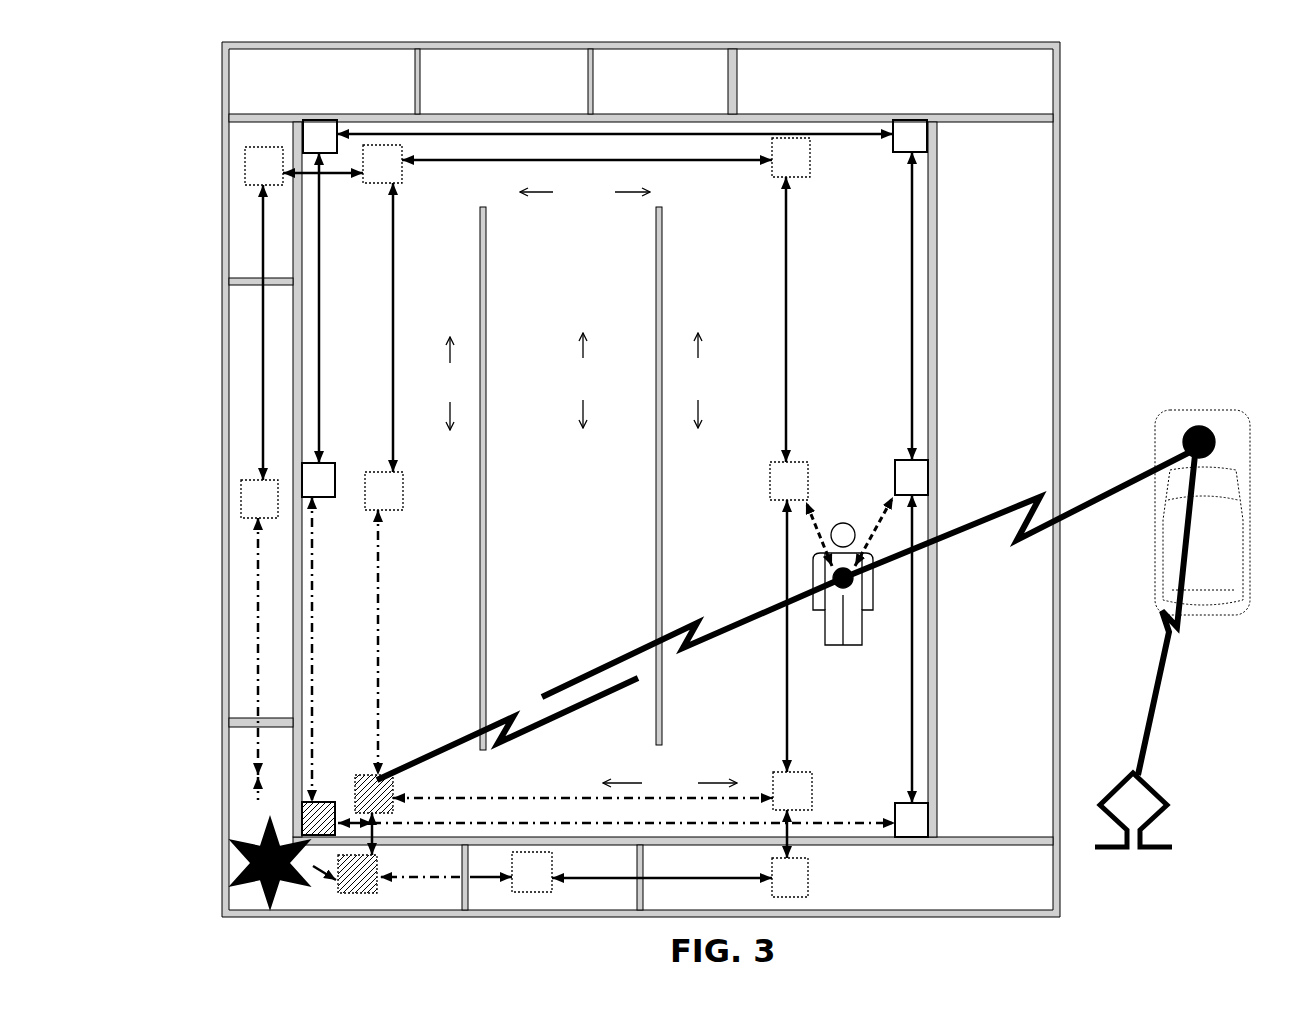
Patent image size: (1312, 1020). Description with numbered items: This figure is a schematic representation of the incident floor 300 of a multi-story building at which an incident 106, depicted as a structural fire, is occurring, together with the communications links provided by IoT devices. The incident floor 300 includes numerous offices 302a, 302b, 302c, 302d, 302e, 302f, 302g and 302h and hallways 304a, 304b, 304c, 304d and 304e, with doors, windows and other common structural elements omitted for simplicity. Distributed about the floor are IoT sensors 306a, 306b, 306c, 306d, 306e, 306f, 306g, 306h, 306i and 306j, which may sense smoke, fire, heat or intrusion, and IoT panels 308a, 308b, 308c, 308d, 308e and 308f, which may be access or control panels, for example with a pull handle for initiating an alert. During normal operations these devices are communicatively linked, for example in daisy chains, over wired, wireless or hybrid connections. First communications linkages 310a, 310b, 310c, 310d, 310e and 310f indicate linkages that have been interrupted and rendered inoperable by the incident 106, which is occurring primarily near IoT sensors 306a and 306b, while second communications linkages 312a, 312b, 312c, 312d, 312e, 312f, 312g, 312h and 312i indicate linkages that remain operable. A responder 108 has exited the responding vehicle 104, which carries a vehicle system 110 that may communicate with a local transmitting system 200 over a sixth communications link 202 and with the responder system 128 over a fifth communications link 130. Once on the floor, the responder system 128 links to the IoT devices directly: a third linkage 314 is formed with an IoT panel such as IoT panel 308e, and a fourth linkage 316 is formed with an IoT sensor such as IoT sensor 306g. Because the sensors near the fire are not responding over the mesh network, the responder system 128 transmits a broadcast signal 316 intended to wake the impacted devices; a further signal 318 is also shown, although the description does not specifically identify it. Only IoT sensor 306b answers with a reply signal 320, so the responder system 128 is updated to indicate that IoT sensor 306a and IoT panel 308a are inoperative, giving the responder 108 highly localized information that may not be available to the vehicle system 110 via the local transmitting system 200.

The incident floor 300 is at (1122, 245).
The incident location 106 is at (358, 700).
The office 302a is at (272, 750).
The office 302b is at (248, 400).
The office 302c is at (369, 81).
The office 302d is at (538, 81).
The office 302e is at (693, 81).
The office 302f is at (874, 453).
The office 302g is at (827, 877).
The office 302h is at (541, 877).
The hallway 304a is at (699, 380).
The hallway 304b is at (670, 783).
The hallway 304c is at (585, 192).
The hallway 304d is at (540, 478).
The hallway 304e is at (456, 383).
The IoT sensor 306a is at (378, 870).
The IoT sensor 306b is at (395, 788).
The IoT sensor 306c is at (245, 500).
The IoT sensor 306d is at (246, 182).
The IoT sensor 306e is at (403, 172).
The IoT sensor 306f is at (775, 180).
The IoT sensor 306g is at (380, 500).
The IoT sensor 306h is at (775, 774).
The IoT sensor 306i is at (668, 235).
The IoT sensor 306j is at (552, 869).
The IoT panel 308a is at (319, 802).
The IoT panel 308b is at (327, 470).
The IoT panel 308c is at (305, 120).
The IoT panel 308d is at (925, 133).
The IoT panel 308e is at (933, 468).
The IoT panel 308f is at (912, 840).
The first communications linkage 310a is at (427, 882).
The first communications linkage 310b is at (225, 894).
The first communications linkage 310c is at (373, 597).
The first communications linkage 310d is at (315, 578).
The first communications linkage 310e is at (454, 795).
The first communications linkage 310f is at (538, 812).
The second communications linkage 312a is at (665, 879).
The second communications linkage 312b is at (790, 714).
The second communications linkage 312c is at (788, 330).
The second communications linkage 312d is at (598, 160).
The second communications linkage 312e is at (383, 285).
The second communications linkage 312f is at (262, 320).
The second communications linkage 312g is at (493, 131).
The second communications linkage 312h is at (910, 205).
The second communications linkage 312i is at (908, 698).
The third linkage 314 is at (873, 530).
The fourth linkage 316 is at (812, 532).
The communication signal 318 is at (632, 652).
The reply signal 320 is at (472, 735).
The responder 108 is at (835, 633).
The responder system 128 is at (855, 579).
The responding vehicle 104 is at (1217, 421).
The vehicle system 110 is at (1192, 427).
The fifth communications link 130 is at (1112, 486).
The sixth communications link 202 is at (1148, 688).
The local transmitting system 200 is at (1162, 815).